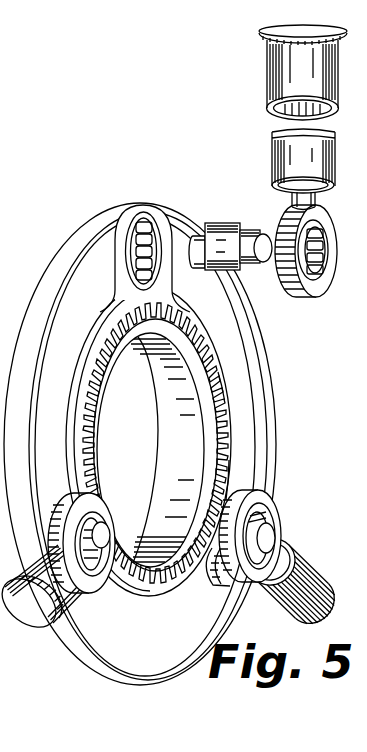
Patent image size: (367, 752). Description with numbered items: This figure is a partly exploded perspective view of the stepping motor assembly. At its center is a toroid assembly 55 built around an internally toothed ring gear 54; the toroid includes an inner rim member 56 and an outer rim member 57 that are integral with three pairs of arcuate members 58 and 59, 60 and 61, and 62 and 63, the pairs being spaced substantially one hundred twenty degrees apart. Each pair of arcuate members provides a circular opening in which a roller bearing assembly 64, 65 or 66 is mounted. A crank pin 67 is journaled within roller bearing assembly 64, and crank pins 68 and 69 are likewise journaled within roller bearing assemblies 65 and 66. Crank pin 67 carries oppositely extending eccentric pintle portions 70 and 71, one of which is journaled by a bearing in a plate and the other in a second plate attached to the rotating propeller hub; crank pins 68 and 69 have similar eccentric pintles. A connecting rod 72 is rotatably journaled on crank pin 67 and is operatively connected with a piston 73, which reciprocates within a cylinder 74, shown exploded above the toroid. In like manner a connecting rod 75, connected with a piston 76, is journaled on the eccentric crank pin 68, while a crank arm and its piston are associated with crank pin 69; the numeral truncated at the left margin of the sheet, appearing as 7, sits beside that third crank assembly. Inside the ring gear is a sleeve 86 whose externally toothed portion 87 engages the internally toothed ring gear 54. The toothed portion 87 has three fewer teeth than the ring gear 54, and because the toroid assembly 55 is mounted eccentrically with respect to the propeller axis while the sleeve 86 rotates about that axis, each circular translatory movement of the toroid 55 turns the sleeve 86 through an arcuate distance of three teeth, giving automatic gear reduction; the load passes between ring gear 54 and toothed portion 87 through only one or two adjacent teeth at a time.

The pin 7 is at (63, 530).
The internally toothed ring gear 54 is at (199, 356).
The toroid assembly 55 is at (154, 204).
The inner rim member 56 is at (92, 336).
The outer rim member 57 is at (66, 256).
The arcuate member 58 is at (116, 269).
The arcuate member 59 is at (158, 253).
The arcuate member 60 is at (214, 580).
The arcuate member 61 is at (228, 492).
The arcuate member 62 is at (47, 495).
The arcuate member 63 is at (72, 592).
The roller bearing assembly 64 is at (150, 235).
The roller bearing assembly 65 is at (258, 516).
The roller bearing assembly 66 is at (90, 569).
The crank pin 67 is at (241, 222).
The crank pin 68 is at (260, 524).
The crank pin 69 is at (92, 572).
The eccentric pintle portion 70 is at (198, 268).
The eccentric pintle portion 71 is at (263, 268).
The connecting rod 72 is at (320, 290).
The piston 73 is at (286, 159).
The cylinder 74 is at (272, 67).
The connecting rod 75 is at (283, 531).
The piston 76 is at (311, 572).
The second sleeve 86 is at (172, 438).
The externally toothed portion 87 is at (228, 380).